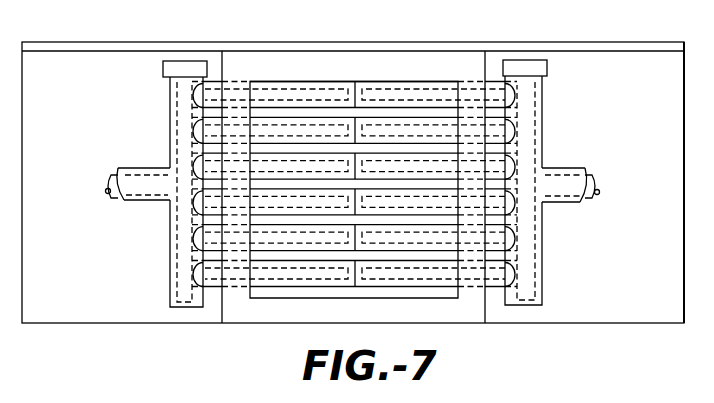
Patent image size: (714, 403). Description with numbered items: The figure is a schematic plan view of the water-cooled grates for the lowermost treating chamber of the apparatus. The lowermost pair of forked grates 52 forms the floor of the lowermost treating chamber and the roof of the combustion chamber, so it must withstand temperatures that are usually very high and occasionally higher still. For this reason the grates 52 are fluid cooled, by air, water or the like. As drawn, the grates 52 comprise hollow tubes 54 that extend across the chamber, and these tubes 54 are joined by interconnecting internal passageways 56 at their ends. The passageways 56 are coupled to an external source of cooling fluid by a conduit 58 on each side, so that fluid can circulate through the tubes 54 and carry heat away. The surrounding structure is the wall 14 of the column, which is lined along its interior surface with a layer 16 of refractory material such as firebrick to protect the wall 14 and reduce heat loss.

The wall 14 is at (222, 65).
The layer of refractory material 16 is at (240, 92).
The lowermost pair of forked grates 52 is at (327, 85).
The hollow tubes 54 is at (285, 90).
The interconnecting internal passageways 56 is at (191, 96).
The conduit 58 is at (106, 188).